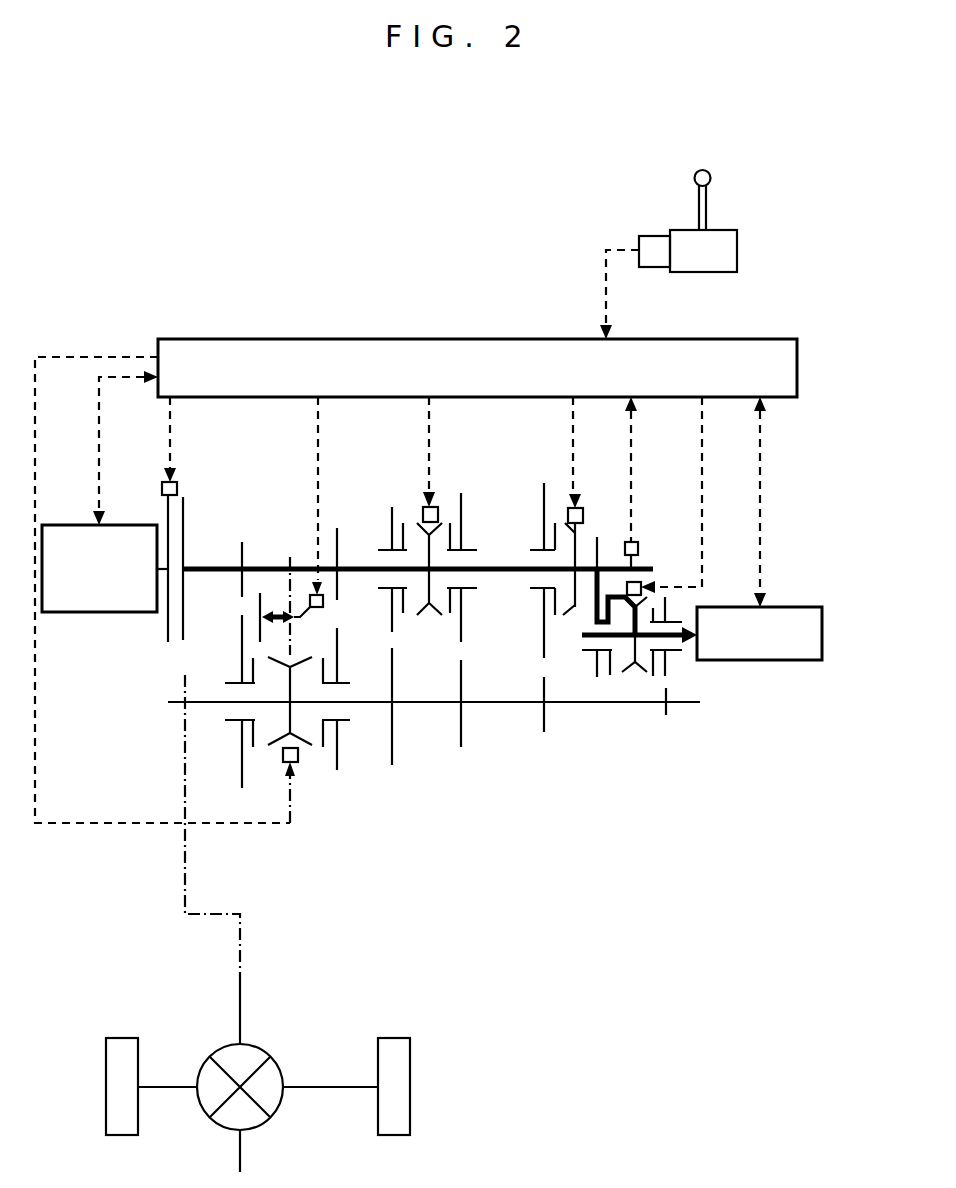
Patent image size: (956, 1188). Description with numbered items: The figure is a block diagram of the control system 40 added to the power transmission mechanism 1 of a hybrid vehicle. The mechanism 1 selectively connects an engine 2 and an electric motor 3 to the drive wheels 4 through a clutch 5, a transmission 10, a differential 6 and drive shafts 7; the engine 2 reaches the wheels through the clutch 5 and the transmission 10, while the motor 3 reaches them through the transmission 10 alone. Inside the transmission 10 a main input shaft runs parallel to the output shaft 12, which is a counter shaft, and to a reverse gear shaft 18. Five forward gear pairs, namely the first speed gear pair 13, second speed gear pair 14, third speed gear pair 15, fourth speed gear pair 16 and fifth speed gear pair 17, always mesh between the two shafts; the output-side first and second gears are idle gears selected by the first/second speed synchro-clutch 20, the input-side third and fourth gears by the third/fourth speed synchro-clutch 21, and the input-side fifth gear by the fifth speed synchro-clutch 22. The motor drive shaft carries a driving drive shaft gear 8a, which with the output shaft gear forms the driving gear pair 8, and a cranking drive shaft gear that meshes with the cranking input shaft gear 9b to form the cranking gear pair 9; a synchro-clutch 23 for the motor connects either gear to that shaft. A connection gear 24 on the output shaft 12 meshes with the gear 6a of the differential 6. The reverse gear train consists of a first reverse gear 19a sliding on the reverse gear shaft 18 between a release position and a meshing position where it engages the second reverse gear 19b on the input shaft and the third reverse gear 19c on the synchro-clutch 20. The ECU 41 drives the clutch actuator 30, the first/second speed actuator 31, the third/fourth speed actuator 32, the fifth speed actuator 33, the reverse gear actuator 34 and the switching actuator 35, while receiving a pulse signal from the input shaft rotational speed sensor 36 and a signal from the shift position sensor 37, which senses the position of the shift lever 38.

The power transmission mechanism 1 is at (632, 935).
The engine 2 is at (92, 613).
The motor 3 is at (797, 607).
The drive wheels 4 is at (122, 1038).
The clutch 5 is at (183, 630).
The differential 6 is at (258, 1046).
The gear of the differential 6a is at (240, 995).
The drive shafts 7 is at (168, 1085).
The driving gear pair 8 is at (666, 716).
The driving drive shaft gear 8a is at (682, 660).
The cranking gear pair 9 is at (598, 677).
The cranking input shaft gear 9b is at (597, 538).
The transmission 10 is at (468, 788).
The output shaft 12 is at (683, 703).
The forward first speed gear pair 13 is at (240, 545).
The forward second speed gear pair 14 is at (337, 528).
The forward third speed gear pair 15 is at (392, 505).
The forward fourth speed gear pair 16 is at (462, 495).
The forward fifth speed gear pair 17 is at (540, 618).
The reverse gear shaft 18 is at (262, 617).
The first reverse gear 19a is at (260, 593).
The second reverse gear 19b is at (289, 557).
The third reverse gear 19c is at (283, 745).
The first/second speed synchro-clutch 20 is at (300, 752).
The third/fourth speed synchro-clutch 21 is at (437, 617).
The fifth speed synchro-clutch 22 is at (572, 610).
The synchro-clutch for the motor 23 is at (640, 672).
The connection gear 24 is at (185, 708).
The clutch actuator 30 is at (177, 485).
The first/second speed actuator 31 is at (298, 770).
The third/fourth speed actuator 32 is at (440, 510).
The fifth speed actuator 33 is at (567, 510).
The reverse gear actuator 34 is at (323, 603).
The switching actuator 35 is at (641, 585).
The input shaft rotational speed sensor 36 is at (639, 545).
The shift position sensor 37 is at (651, 236).
The shift lever 38 is at (707, 210).
The control system 40 is at (416, 487).
The ECU 41 is at (352, 338).